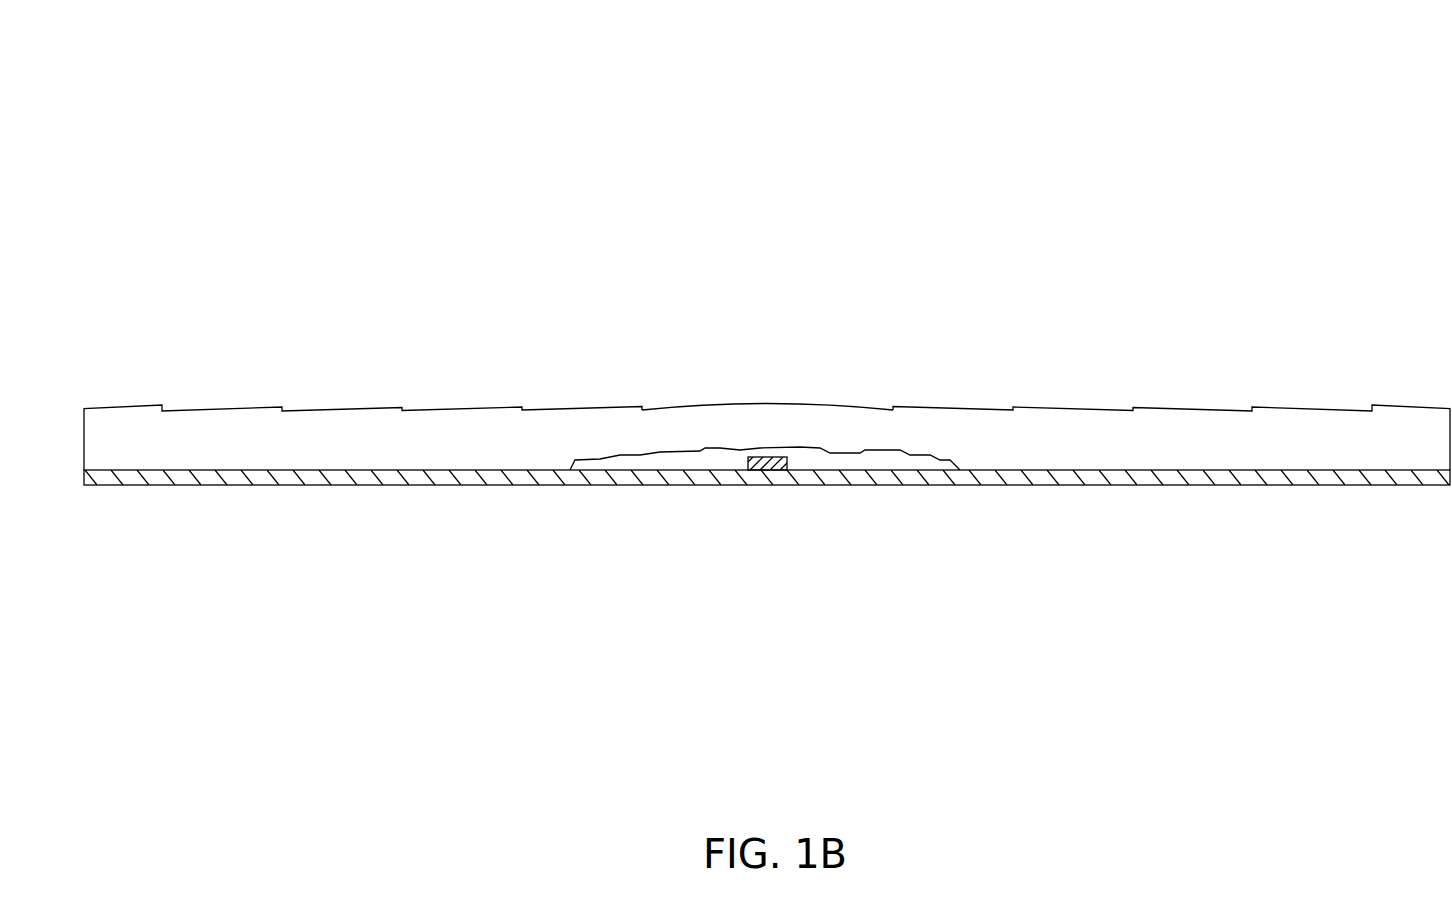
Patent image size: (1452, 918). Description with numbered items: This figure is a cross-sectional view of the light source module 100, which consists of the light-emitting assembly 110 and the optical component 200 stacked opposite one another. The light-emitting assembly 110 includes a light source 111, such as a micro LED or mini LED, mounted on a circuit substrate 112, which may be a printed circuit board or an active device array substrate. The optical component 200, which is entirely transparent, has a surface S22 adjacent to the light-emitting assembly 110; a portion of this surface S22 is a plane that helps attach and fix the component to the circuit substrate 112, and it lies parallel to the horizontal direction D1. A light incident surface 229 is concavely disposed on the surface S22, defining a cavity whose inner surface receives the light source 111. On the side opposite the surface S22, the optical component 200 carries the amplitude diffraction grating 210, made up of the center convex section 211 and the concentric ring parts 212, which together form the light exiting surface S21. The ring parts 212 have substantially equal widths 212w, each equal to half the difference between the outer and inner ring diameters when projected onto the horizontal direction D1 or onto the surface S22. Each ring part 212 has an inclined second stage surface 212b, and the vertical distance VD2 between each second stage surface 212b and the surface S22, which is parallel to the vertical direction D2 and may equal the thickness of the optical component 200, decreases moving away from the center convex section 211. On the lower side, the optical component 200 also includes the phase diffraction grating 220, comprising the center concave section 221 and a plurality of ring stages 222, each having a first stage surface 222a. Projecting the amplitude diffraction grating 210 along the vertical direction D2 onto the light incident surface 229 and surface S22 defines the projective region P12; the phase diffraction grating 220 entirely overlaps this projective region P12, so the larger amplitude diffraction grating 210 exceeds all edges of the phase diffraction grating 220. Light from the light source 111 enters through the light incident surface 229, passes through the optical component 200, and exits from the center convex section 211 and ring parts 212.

The light source module 100 is at (92, 80).
The light-emitting assembly 110 is at (807, 543).
The light source 111 is at (768, 470).
The circuit substrate 112 is at (850, 522).
The optical component 200 is at (1233, 455).
The amplitude diffraction grating 210 is at (767, 340).
The center convex section 211 is at (772, 415).
The ring parts 212 is at (930, 415).
The second stage surface 212b is at (461, 392).
The width of the ring parts 212w is at (402, 330).
The phase diffraction grating 220 is at (741, 536).
The center concave section 221 is at (755, 443).
The ring stages 222 is at (599, 460).
The first stage surface 222a is at (637, 468).
The light incident surface 229 is at (948, 470).
The light exiting surface S21 is at (593, 342).
The surface S22 is at (1130, 483).
The vertical distance VD2 is at (328, 408).
The projective region P12 is at (1450, 767).
The horizontal direction D1 is at (240, 207).
The vertical direction D2 is at (240, 222).